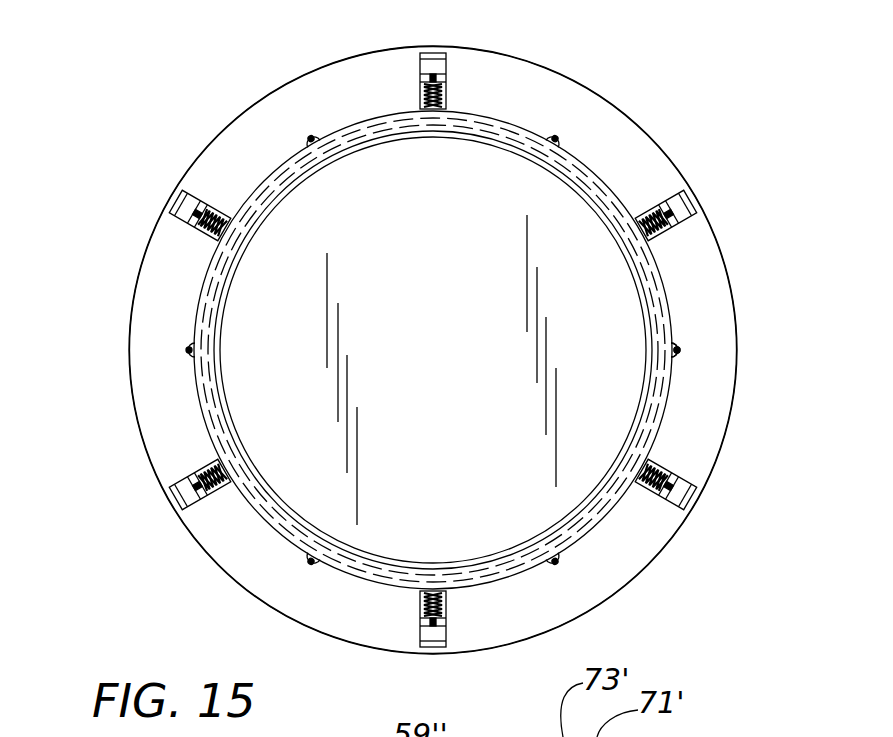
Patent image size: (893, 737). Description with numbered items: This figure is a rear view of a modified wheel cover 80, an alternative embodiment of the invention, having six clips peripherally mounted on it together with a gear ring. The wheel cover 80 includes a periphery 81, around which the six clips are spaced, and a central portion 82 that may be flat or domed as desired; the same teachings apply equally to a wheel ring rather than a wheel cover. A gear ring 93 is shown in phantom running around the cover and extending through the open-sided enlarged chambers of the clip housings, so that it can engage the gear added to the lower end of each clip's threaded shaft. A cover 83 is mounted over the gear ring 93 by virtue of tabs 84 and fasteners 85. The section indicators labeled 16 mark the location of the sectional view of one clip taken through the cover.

The section line / clip 16 is at (435, 48).
The wheel cover 80 is at (165, 168).
The periphery 81 is at (262, 603).
The central portion 82 is at (458, 350).
The cover 83 is at (665, 278).
The tabs 84 is at (679, 347).
The fasteners 85 is at (681, 352).
The gear ring 93 is at (657, 413).